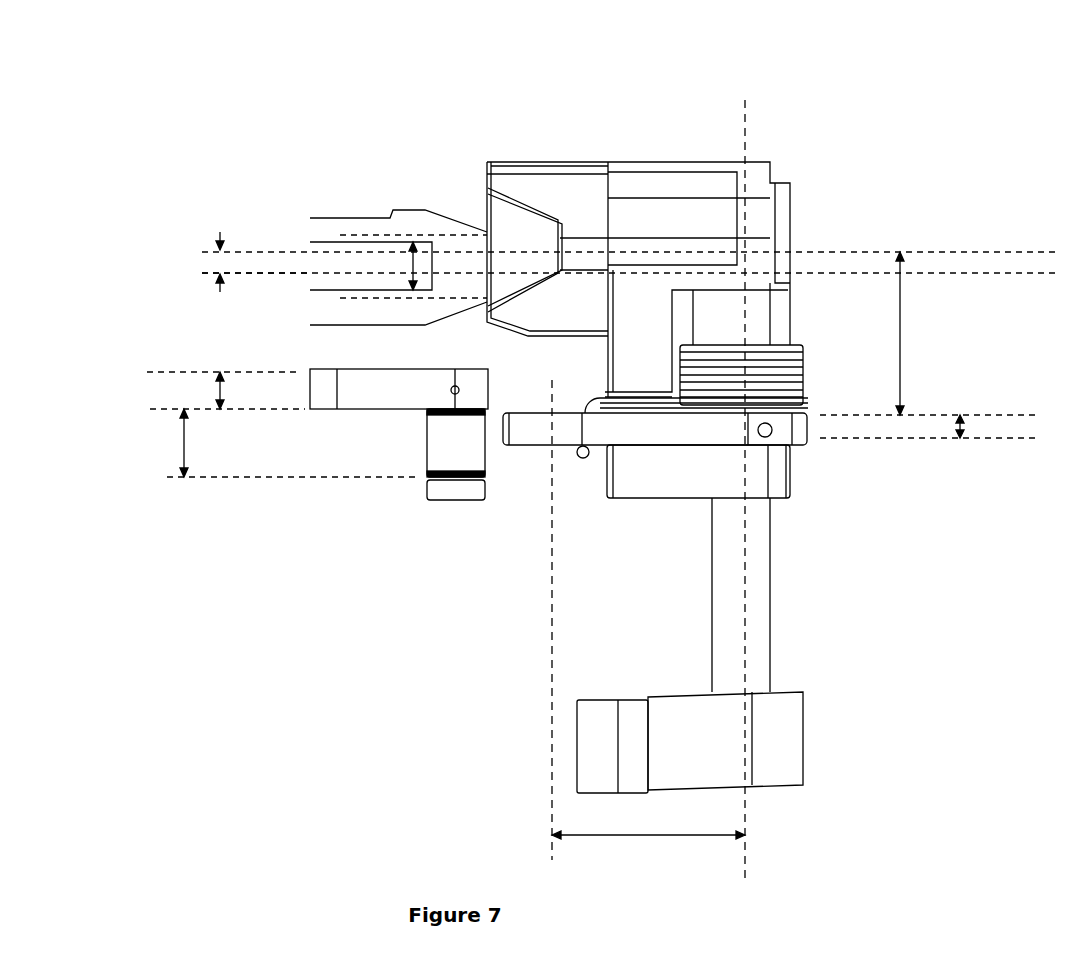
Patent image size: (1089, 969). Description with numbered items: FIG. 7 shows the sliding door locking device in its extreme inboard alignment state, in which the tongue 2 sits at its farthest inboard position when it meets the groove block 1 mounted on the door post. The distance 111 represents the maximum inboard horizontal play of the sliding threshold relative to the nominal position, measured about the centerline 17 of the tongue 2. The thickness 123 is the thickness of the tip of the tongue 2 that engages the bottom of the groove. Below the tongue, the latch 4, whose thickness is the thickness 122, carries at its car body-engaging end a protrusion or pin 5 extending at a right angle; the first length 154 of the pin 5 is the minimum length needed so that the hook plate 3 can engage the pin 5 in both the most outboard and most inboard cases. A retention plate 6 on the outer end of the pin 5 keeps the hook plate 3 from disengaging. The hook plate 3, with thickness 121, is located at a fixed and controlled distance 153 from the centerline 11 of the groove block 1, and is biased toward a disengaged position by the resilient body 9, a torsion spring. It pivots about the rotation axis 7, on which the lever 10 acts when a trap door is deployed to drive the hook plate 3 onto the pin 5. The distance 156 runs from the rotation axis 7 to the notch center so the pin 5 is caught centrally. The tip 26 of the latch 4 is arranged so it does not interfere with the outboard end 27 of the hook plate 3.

The groove block 1 is at (538, 150).
The tongue 2 is at (368, 203).
The hook plate 3 is at (528, 455).
The latch 4 is at (342, 419).
The protrusion 5 is at (417, 448).
The retention plate 6 is at (462, 510).
The rotation axis 7 is at (756, 862).
The resilient body 9 is at (805, 334).
The lever 10 is at (566, 740).
The centerline 11 is at (973, 229).
The centerline 17 is at (287, 291).
The tip 26 is at (501, 379).
The outboard end 27 is at (517, 404).
The distance D2 111 is at (187, 263).
The thickness T1 121 is at (979, 431).
The thickness T2 122 is at (205, 397).
The thickness T3 123 is at (403, 262).
The distance 153 is at (916, 369).
The first length 154 is at (196, 447).
The distance D10 156 is at (642, 850).